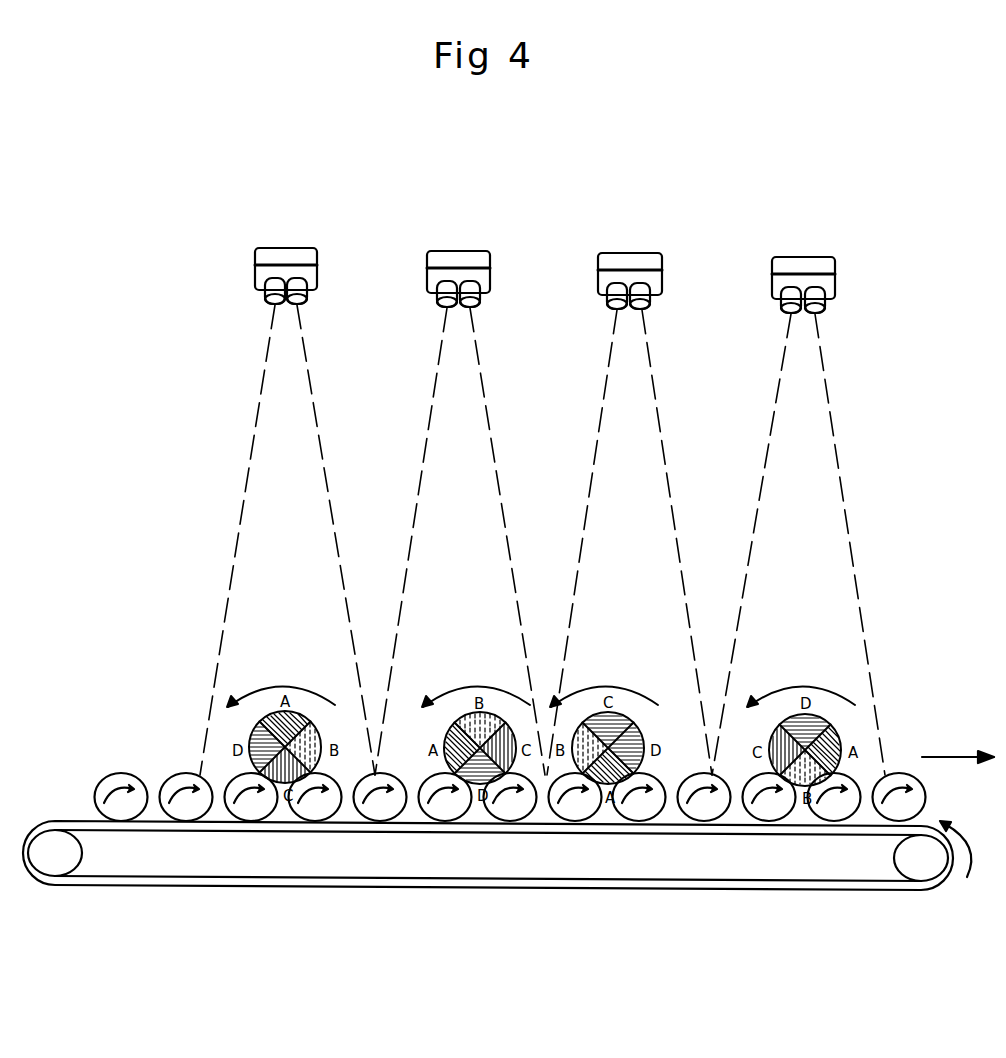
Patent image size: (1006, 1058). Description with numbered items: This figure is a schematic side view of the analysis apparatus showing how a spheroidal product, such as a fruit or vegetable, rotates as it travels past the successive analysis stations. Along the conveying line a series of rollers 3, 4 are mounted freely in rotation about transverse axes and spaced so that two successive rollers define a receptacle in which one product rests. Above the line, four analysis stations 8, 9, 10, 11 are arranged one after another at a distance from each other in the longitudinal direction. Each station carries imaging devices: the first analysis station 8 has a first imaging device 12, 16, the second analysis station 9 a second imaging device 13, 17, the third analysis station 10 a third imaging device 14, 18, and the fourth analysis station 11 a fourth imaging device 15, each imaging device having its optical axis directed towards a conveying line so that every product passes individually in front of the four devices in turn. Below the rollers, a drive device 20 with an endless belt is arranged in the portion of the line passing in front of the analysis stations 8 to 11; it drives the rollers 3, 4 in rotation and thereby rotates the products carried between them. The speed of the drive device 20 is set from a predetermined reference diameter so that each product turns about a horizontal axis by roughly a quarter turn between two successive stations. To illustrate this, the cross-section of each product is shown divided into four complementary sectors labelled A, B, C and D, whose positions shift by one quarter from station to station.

The roller 3 is at (897, 803).
The roller 4 is at (897, 803).
The first analysis station 8 is at (267, 445).
The second analysis station 9 is at (446, 445).
The third analysis station 10 is at (613, 446).
The fourth analysis station 11 is at (786, 447).
The first imaging device 12 is at (267, 256).
The second imaging device 13 is at (440, 262).
The third imaging device 14 is at (608, 265).
The fourth imaging device 15 is at (790, 262).
The first imaging device 16 is at (297, 291).
The second imaging device 17 is at (470, 294).
The third imaging device 18 is at (640, 296).
The drive device 20 is at (622, 868).